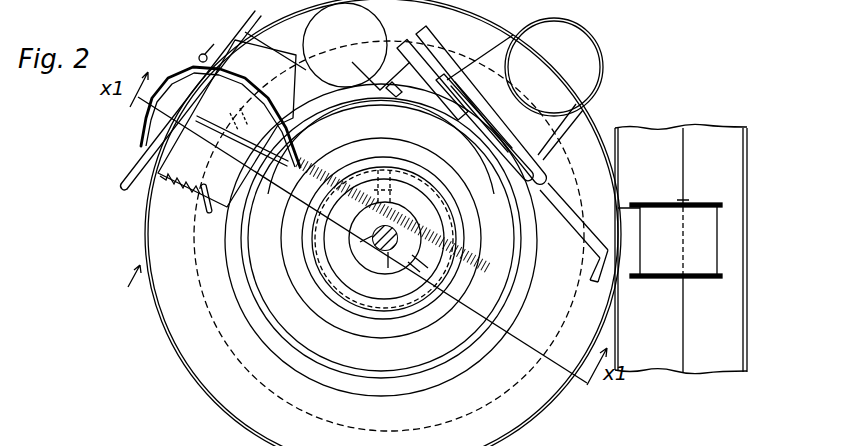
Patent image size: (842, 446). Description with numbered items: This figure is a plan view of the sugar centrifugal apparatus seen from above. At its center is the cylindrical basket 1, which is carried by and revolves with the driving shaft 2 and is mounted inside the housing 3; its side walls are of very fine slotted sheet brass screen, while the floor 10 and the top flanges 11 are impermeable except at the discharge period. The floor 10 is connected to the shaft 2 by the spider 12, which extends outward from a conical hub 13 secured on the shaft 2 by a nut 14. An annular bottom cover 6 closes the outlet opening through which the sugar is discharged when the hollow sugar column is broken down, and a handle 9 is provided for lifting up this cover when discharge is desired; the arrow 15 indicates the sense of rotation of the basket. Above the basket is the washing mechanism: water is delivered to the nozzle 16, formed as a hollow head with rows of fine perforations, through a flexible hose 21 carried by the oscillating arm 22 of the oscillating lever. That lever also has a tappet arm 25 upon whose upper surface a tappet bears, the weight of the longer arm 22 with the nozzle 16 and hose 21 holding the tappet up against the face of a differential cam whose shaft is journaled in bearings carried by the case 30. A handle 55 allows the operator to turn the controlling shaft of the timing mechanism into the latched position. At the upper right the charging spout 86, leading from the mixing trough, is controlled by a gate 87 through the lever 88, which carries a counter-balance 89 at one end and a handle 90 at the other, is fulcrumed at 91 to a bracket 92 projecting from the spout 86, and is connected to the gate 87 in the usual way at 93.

The cylindrical basket 1 is at (512, 383).
The driving shaft 2 is at (383, 250).
The housing 3 is at (560, 403).
The annular bottom cover 6 is at (362, 333).
The handle 9 is at (340, 262).
The floor 10 is at (317, 313).
The top flanges 11 is at (474, 350).
The spider 12 is at (360, 243).
The conical hub 13 is at (424, 262).
The nut 14 is at (388, 268).
The direction of rotation 15 is at (122, 290).
The nozzle 16 is at (352, 98).
The flexible hose 21 is at (170, 82).
The oscillating arm 22 is at (293, 150).
The tappet arm 25 is at (223, 122).
The case 30 is at (263, 49).
The handle 55 is at (209, 212).
The charging spout 86 is at (554, 67).
The gate 87 is at (493, 141).
The lever 88 is at (501, 180).
The counter-balance 89 is at (379, 18).
The handle 90 is at (574, 244).
The fulcrum 91 is at (367, 97).
The bracket 92 is at (447, 56).
The connection 93 is at (442, 102).